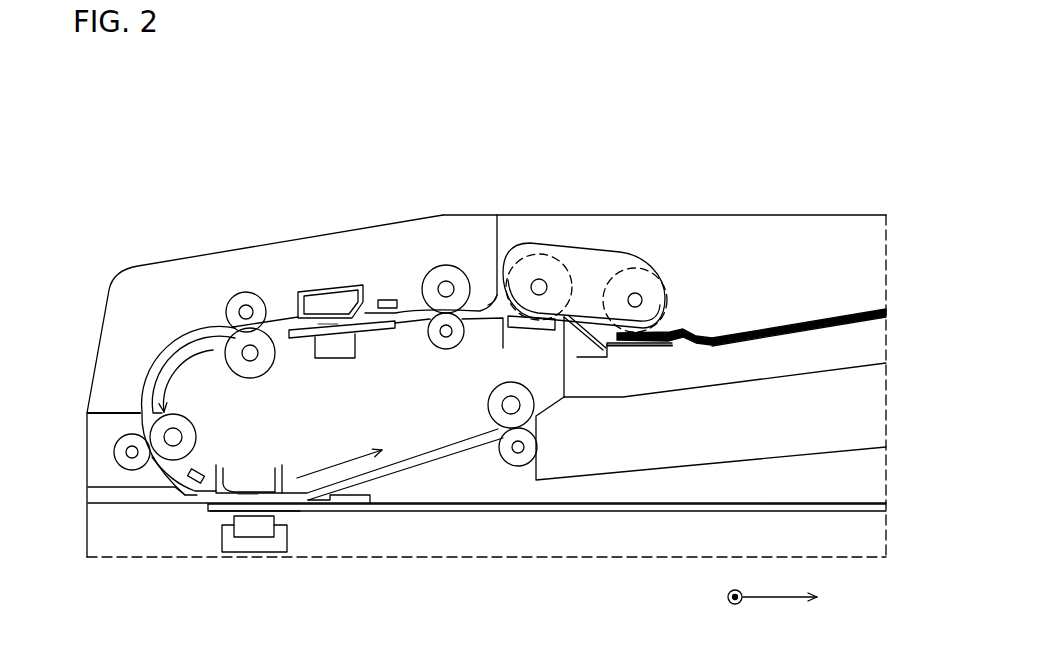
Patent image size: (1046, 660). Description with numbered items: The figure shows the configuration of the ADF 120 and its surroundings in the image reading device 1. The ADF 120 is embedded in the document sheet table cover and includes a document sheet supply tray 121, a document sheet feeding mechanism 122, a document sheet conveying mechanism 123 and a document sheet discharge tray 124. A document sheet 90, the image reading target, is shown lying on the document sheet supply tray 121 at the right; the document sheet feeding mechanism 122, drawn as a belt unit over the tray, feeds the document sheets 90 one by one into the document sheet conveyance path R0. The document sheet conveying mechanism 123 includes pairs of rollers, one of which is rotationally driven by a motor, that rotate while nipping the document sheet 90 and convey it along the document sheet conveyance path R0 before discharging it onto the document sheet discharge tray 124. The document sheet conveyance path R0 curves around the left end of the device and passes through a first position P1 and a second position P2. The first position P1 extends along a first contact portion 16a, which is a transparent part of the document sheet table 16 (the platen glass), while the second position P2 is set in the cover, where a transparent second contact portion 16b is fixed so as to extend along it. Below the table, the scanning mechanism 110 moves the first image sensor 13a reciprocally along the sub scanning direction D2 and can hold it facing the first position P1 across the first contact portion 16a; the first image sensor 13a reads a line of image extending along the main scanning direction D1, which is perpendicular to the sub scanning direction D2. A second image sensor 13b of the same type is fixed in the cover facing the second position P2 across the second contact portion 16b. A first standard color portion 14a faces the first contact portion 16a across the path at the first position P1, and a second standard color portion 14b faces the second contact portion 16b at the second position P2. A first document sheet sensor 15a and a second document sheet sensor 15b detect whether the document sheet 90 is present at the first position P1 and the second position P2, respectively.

The image reading device 1 is at (798, 140).
The ADF 120 is at (110, 290).
The document sheet conveyance path R0 is at (142, 387).
The document sheet conveying mechanism 123 is at (240, 290).
The first standard color portion 14a is at (260, 487).
The first document sheet sensor 15a is at (200, 493).
The first position P1 is at (247, 500).
The document sheet table 16 is at (542, 512).
The first contact portion 16a is at (277, 513).
The first image sensor 13a is at (253, 537).
The scanning mechanism 110 is at (230, 555).
The second standard color portion 14b is at (337, 310).
The second position P2 is at (327, 322).
The second document sheet sensor 15b is at (386, 298).
The second contact portion 16b is at (387, 332).
The second image sensor 13b is at (338, 360).
The document sheet feeding mechanism 122 is at (578, 243).
The document sheet 90 is at (855, 310).
The document sheet supply tray 121 is at (828, 330).
The document sheet discharge tray 124 is at (703, 463).
The main scanning direction D1 is at (742, 613).
The sub scanning direction D2 is at (798, 600).